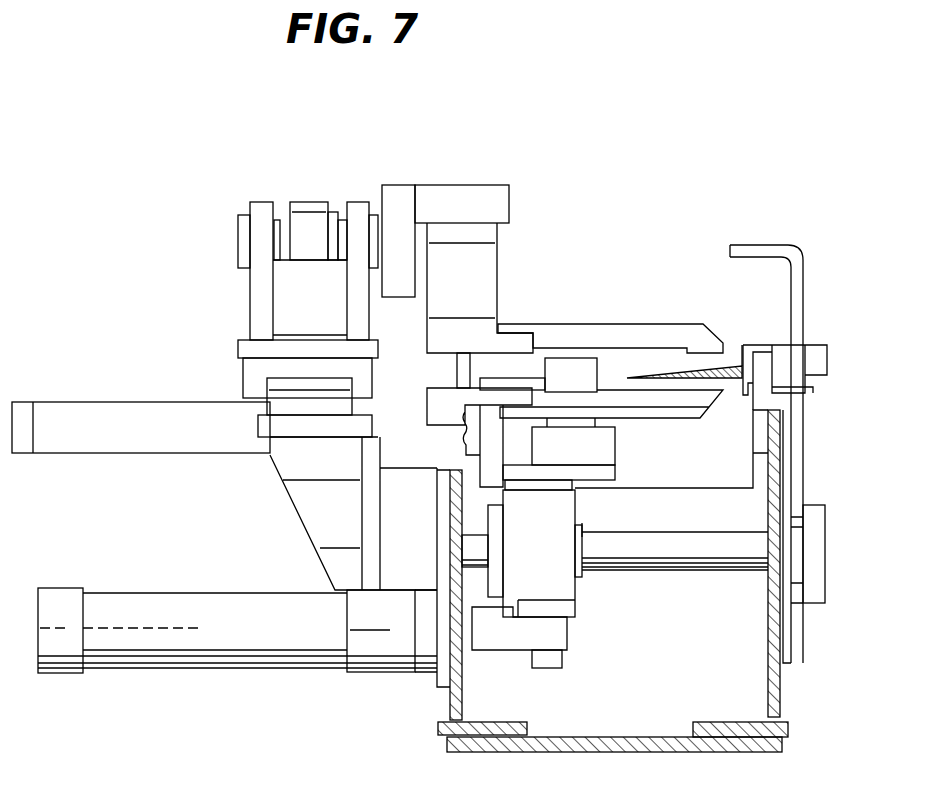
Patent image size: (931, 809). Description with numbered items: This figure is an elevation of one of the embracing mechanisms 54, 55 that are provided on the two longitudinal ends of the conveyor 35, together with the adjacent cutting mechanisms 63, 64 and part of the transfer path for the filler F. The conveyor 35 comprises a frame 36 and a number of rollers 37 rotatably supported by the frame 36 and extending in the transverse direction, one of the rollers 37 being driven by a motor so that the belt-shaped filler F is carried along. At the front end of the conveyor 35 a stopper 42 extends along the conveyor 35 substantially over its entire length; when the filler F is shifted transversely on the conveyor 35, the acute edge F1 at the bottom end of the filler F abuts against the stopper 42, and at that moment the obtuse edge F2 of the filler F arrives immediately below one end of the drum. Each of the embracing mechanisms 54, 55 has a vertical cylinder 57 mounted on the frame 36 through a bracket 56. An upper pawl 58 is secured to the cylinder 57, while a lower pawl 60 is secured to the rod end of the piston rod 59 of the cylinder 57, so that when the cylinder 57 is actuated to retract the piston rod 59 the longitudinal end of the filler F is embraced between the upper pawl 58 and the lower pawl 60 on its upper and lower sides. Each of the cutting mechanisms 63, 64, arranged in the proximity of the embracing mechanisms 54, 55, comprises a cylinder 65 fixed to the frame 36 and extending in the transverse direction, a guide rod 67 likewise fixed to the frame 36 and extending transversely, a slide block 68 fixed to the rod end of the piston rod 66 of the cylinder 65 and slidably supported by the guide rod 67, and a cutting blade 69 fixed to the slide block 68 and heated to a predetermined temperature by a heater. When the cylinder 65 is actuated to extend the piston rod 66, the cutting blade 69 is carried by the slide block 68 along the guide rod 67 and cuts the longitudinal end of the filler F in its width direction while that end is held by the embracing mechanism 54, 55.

The conveyor 35 is at (632, 492).
The frame 36 is at (782, 700).
The rollers 37 is at (712, 483).
The stopper 42 is at (765, 345).
The embracing mechanism 54 is at (514, 195).
The embracing mechanism 55 is at (513, 195).
The bracket 56 is at (258, 301).
The vertical cylinder 57 is at (485, 265).
The upper pawl 58 is at (600, 333).
The piston rod 59 is at (457, 372).
The lower pawl 60 is at (642, 417).
The cutting mechanism 63 is at (595, 627).
The cutting mechanism 64 is at (572, 625).
The cylinder 65 is at (226, 655).
The piston rod 66 is at (496, 640).
The guide rod 67 is at (718, 570).
The slide block 68 is at (567, 585).
The cutting blade 69 is at (572, 370).
The filler F is at (667, 372).
The acute edge F1 is at (742, 389).
The obtuse edge F2 is at (738, 367).